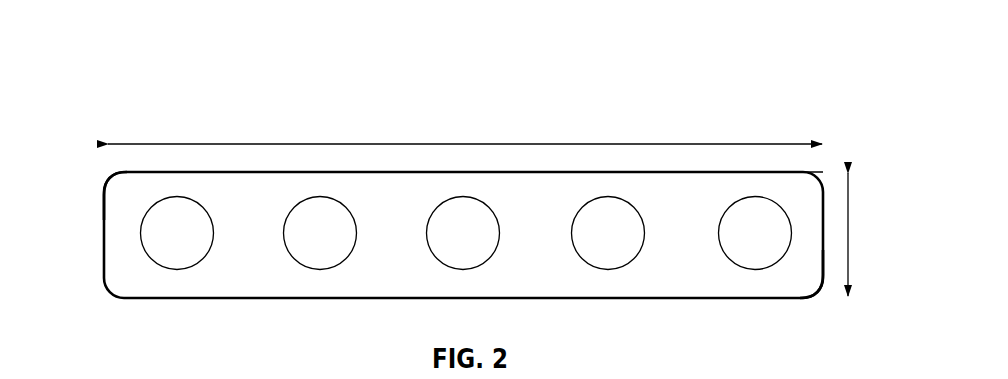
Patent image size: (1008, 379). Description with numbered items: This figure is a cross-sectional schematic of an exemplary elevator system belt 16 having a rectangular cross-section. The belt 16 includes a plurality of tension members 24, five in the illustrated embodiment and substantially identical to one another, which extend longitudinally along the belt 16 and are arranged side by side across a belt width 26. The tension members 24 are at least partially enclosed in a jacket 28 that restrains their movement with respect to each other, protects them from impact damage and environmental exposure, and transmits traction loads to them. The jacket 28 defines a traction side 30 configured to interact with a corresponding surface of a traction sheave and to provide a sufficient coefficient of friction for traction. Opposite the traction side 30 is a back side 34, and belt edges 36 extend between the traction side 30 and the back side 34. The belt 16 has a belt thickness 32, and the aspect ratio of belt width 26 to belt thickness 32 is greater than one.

The belt 16 is at (170, 86).
The tension members 24 is at (166, 243).
The belt width 26 is at (303, 144).
The jacket 28 is at (115, 254).
The traction side 30 is at (201, 298).
The belt thickness 32 is at (848, 227).
The back side 34 is at (797, 171).
The belt edges 36 is at (104, 211).